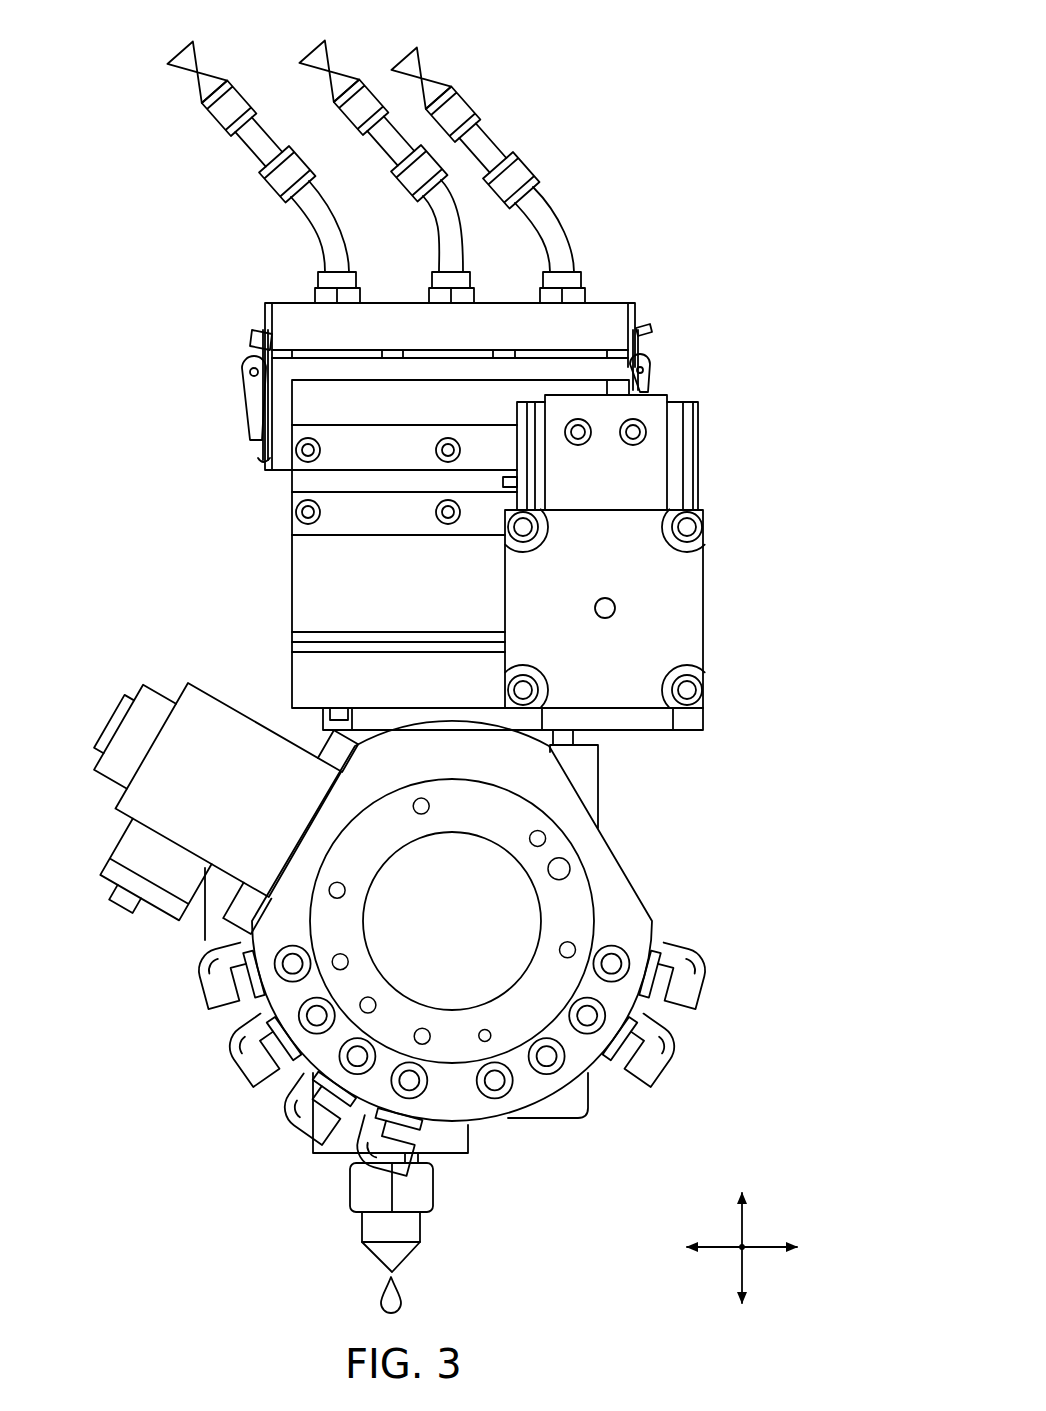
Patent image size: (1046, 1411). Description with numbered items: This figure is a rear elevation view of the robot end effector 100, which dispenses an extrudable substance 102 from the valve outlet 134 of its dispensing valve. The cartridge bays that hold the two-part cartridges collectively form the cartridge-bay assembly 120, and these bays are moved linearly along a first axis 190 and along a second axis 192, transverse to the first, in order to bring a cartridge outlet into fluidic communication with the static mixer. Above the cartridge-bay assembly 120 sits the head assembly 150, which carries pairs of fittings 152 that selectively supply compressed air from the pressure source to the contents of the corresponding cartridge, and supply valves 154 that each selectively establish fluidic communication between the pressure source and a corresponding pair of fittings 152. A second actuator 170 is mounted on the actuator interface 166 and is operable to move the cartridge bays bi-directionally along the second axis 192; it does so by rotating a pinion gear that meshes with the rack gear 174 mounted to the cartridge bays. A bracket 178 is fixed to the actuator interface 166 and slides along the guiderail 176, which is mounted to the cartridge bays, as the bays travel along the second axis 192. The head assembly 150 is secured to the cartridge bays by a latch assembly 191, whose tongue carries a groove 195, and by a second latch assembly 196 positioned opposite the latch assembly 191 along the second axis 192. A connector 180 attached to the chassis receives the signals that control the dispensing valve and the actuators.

The robot end effector 100 is at (745, 128).
The extrudable substance 102 is at (403, 1302).
The cartridge-bay assembly 120 is at (292, 572).
The valve outlet 134 is at (371, 1278).
The head assembly 150 is at (655, 296).
The pairs of fittings 152 is at (349, 279).
The supply valves 154 is at (181, 52).
The actuator interface 166 is at (700, 718).
The second actuator 170 is at (703, 524).
The rack gear 174 is at (292, 630).
The guiderail 176 is at (292, 505).
The bracket 178 is at (700, 455).
The connector 180 is at (495, 1108).
The first axis 190 is at (742, 1218).
The latch assembly 191 is at (670, 345).
The second axis 192 is at (763, 1243).
The groove 195 is at (601, 789).
The second latch assembly 196 is at (223, 377).